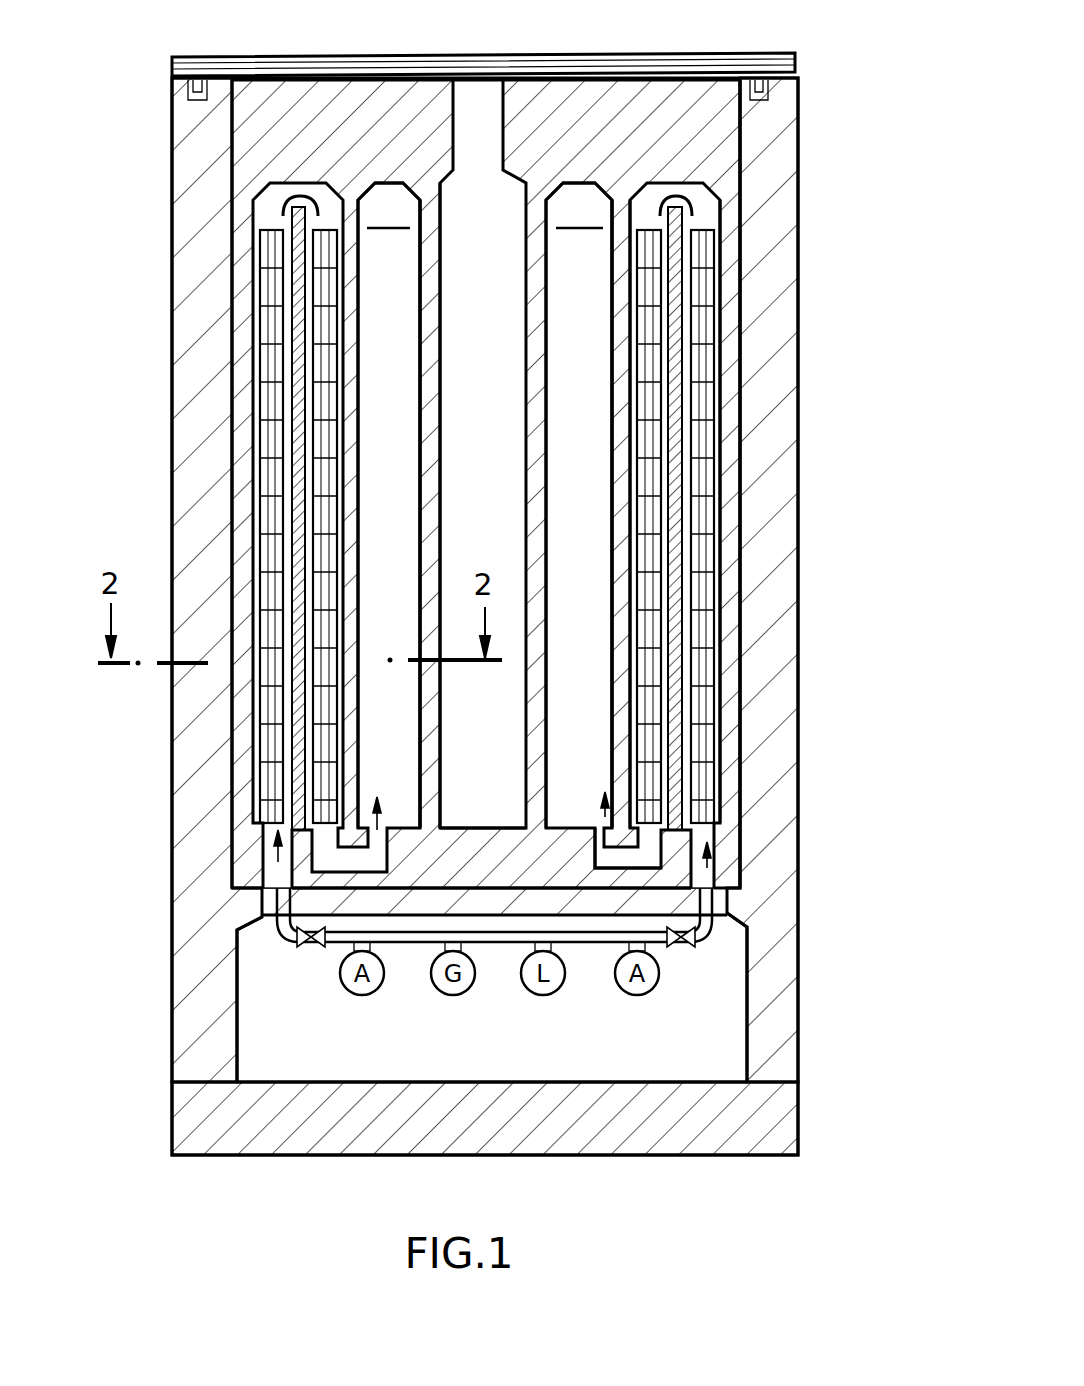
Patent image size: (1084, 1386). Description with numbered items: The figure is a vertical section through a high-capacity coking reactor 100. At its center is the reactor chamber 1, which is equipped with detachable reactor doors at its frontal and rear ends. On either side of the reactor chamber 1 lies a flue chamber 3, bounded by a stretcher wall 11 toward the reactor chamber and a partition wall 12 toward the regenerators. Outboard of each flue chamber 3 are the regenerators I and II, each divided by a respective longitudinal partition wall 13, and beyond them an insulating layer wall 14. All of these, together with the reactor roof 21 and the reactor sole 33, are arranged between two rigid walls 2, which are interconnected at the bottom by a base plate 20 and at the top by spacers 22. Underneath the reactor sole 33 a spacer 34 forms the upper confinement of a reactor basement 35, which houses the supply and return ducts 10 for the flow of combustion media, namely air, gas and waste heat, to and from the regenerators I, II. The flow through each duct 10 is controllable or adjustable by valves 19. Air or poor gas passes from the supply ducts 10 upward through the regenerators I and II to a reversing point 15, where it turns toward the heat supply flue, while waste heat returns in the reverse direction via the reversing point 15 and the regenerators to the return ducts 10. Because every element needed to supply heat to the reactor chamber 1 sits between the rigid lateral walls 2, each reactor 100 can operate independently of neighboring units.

The high-capacity coking reactor 100 is at (831, 102).
The reactor chamber 1 is at (468, 289).
The rigid wall 2 is at (782, 303).
The flue chamber 3 is at (375, 335).
The supply- and return ducts 10 is at (283, 945).
The stretcher wall 11 is at (537, 460).
The partition wall 12 is at (615, 517).
The longitudinal partition wall 13 is at (675, 638).
The insulating layer wall 14 is at (730, 715).
The reversing point 15 is at (640, 853).
The valve 19 is at (673, 942).
The base plate 20 is at (221, 1135).
The reactor roof 21 is at (692, 97).
The spacer 22 is at (632, 60).
The reactor sole 33 is at (483, 840).
The spacer 34 is at (567, 907).
The reactor basement 35 is at (488, 1047).
The regenerator I is at (277, 453).
The regenerator II is at (325, 533).